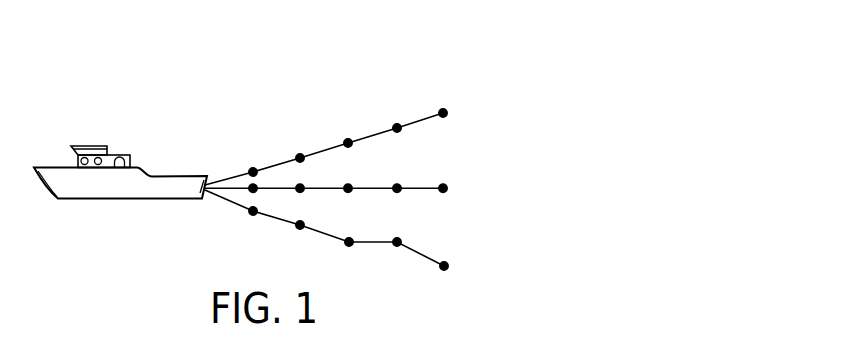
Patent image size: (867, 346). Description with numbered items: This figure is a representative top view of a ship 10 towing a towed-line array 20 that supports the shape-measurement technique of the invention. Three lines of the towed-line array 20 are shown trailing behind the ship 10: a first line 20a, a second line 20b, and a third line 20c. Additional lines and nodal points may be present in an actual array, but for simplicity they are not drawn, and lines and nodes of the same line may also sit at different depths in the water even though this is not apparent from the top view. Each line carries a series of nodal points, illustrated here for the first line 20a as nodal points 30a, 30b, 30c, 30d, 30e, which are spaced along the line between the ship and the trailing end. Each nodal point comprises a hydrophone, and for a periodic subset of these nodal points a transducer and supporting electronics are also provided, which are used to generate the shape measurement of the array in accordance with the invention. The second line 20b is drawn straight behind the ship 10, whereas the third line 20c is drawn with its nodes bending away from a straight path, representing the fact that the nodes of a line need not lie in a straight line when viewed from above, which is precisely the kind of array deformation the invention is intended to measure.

The ship 10 is at (144, 170).
The towed-line array 20 is at (493, 70).
The first line 20a is at (458, 115).
The second line 20b is at (460, 188).
The third line 20c is at (460, 273).
The nodal point 30a is at (253, 168).
The nodal point 30b is at (300, 154).
The nodal point 30c is at (348, 139).
The nodal point 30d is at (397, 124).
The nodal point 30e is at (443, 109).